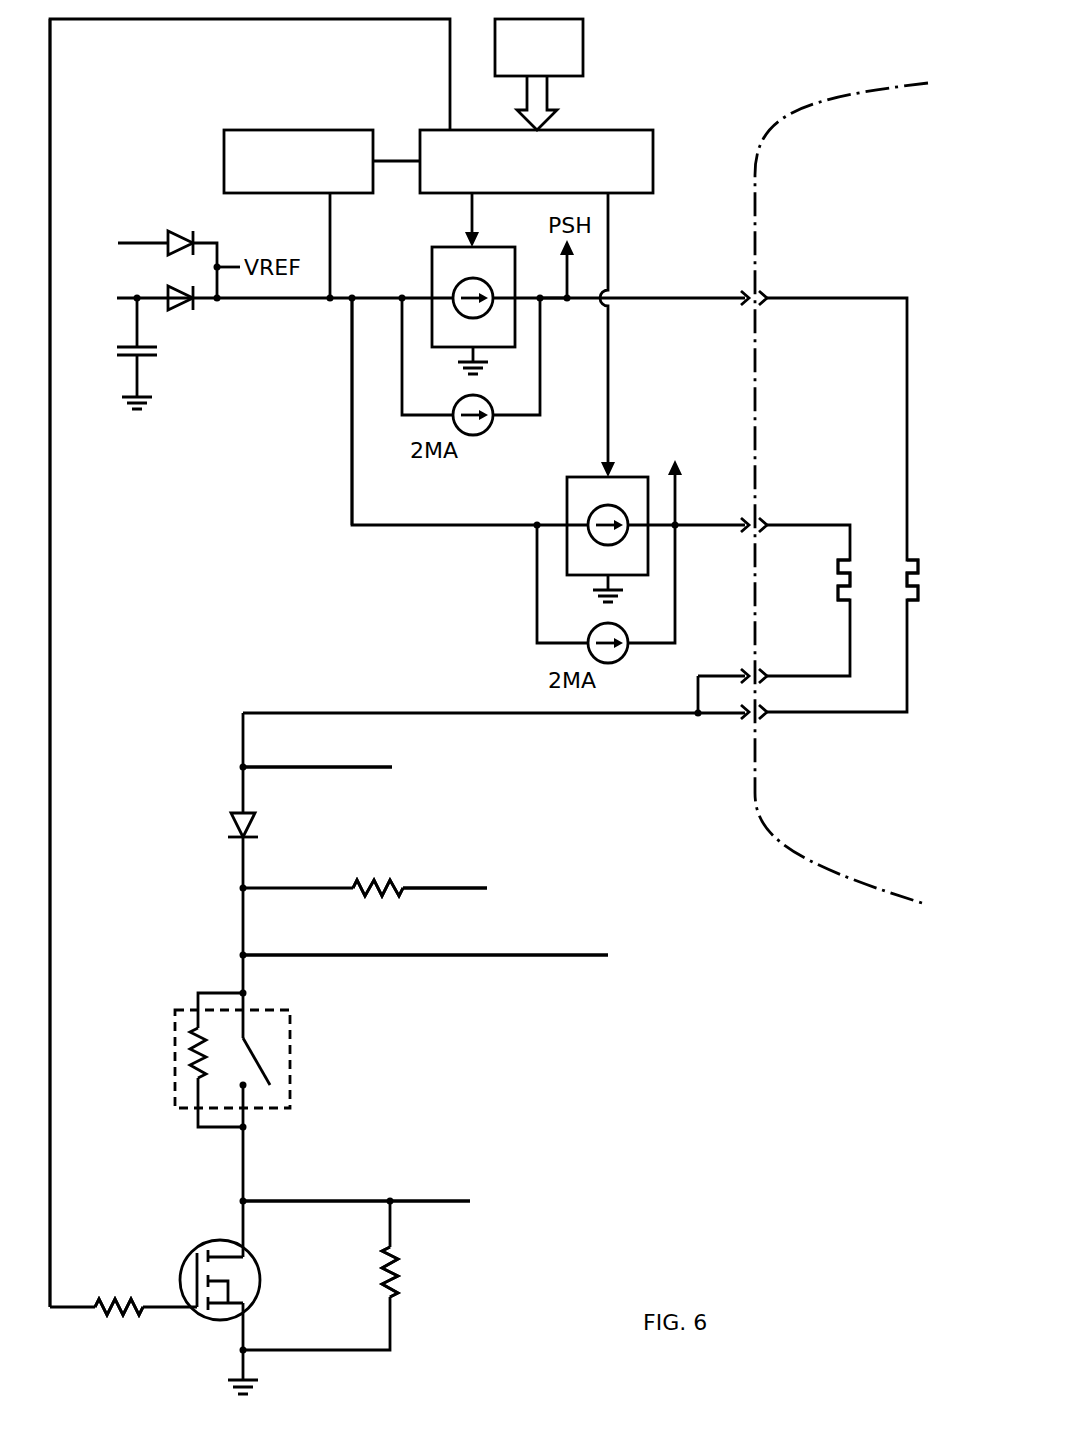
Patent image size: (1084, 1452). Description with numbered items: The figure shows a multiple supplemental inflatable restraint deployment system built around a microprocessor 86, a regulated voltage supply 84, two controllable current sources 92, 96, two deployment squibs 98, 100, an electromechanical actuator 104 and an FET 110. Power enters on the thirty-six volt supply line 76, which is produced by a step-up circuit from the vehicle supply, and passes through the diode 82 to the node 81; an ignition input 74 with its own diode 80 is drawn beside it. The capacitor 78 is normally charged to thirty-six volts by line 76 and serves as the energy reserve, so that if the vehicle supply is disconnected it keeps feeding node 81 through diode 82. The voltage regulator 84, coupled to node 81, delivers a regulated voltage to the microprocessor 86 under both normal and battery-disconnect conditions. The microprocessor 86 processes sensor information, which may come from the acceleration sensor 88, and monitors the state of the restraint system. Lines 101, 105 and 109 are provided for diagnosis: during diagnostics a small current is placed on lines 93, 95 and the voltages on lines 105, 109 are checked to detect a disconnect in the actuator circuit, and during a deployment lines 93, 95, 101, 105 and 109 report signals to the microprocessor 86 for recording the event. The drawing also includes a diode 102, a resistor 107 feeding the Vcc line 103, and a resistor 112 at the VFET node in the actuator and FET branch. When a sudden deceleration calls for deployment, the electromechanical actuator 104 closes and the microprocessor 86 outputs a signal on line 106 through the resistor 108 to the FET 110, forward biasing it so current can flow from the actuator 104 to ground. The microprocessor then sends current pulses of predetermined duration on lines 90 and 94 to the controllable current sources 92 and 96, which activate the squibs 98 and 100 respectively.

The ignition input line 74 is at (148, 240).
The line 76 is at (132, 305).
The capacitor 78 is at (145, 365).
The diode 80 is at (186, 235).
The node 81 is at (352, 310).
The diode 82 is at (180, 310).
The voltage regulator 84 is at (300, 130).
The microprocessor 86 is at (600, 130).
The acceleration sensor 88 is at (583, 35).
The line 90 is at (472, 210).
The controllable current source 92 is at (432, 278).
The line 93 is at (548, 305).
The line 94 is at (608, 258).
The line 95 is at (745, 520).
The controllable current source 96 is at (567, 502).
The deployment squib 98 is at (907, 575).
The deployment squib 100 is at (850, 605).
The line 101 is at (300, 770).
The diode 102 is at (238, 828).
The Vcc line 103 is at (487, 888).
The electromechanical actuator 104 is at (178, 1052).
The line 105 is at (570, 955).
The line 106 is at (50, 1248).
The resistor 107 is at (360, 893).
The resistor 108 is at (122, 1302).
The line 109 is at (420, 1205).
The FET 110 is at (218, 1320).
The resistor 112 is at (396, 1285).